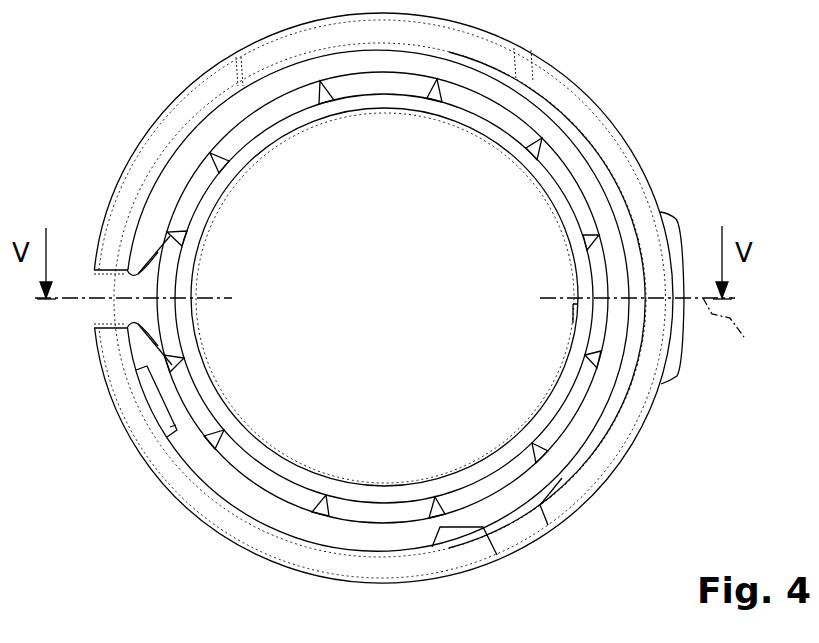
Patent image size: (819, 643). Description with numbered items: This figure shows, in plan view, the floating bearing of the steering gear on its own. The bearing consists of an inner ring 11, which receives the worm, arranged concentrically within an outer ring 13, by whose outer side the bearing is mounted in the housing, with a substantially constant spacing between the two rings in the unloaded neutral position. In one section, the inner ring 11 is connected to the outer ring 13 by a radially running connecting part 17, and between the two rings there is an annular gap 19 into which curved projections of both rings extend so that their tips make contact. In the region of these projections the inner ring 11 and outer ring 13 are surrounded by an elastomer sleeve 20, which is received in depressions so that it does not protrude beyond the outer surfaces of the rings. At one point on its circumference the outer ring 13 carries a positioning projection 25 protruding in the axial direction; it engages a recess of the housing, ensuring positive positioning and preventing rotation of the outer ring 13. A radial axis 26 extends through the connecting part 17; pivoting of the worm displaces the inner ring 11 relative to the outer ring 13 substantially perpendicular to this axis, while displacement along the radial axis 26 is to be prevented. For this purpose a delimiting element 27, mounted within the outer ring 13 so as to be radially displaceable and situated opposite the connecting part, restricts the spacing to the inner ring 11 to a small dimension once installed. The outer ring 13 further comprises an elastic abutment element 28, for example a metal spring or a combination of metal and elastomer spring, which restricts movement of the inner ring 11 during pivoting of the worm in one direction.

The inner ring 11 is at (573, 185).
The outer ring 13 is at (590, 116).
The connecting part 17 is at (120, 310).
The annular gap 19 is at (225, 465).
The elastomer sleeve 20 is at (117, 338).
The positioning projection 25 is at (152, 403).
The radial axis 26 is at (731, 329).
The delimiting element 27 is at (690, 325).
The elastic abutment element 28 is at (517, 527).